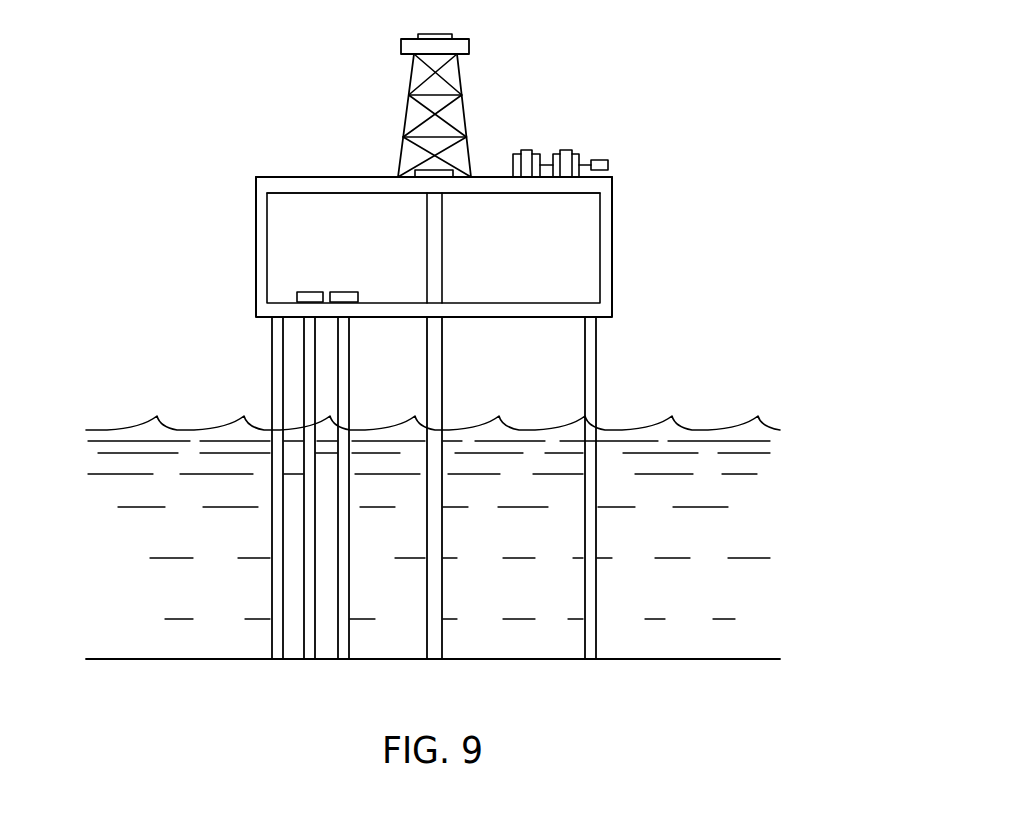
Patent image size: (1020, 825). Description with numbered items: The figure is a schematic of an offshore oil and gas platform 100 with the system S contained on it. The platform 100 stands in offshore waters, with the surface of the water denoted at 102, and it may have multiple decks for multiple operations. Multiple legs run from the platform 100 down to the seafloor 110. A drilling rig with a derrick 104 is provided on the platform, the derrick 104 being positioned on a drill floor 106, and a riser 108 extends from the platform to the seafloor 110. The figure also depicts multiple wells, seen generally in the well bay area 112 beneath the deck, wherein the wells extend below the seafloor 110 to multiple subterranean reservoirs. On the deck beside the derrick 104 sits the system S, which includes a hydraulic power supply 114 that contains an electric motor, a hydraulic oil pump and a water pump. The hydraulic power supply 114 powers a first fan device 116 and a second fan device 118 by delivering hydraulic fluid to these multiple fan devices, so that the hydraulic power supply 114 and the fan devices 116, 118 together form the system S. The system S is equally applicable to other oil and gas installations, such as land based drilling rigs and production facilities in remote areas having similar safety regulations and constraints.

The offshore oil and gas platform 100 is at (255, 189).
The surface of the water 102 is at (703, 430).
The derrick 104 is at (408, 93).
The drill floor 106 is at (350, 177).
The riser 108 is at (443, 377).
The seafloor 110 is at (742, 658).
The well bay area 112 is at (302, 292).
The hydraulic power supply 114 is at (608, 165).
The first fan device 116 is at (568, 150).
The second fan device 118 is at (528, 150).
The system S is at (572, 97).